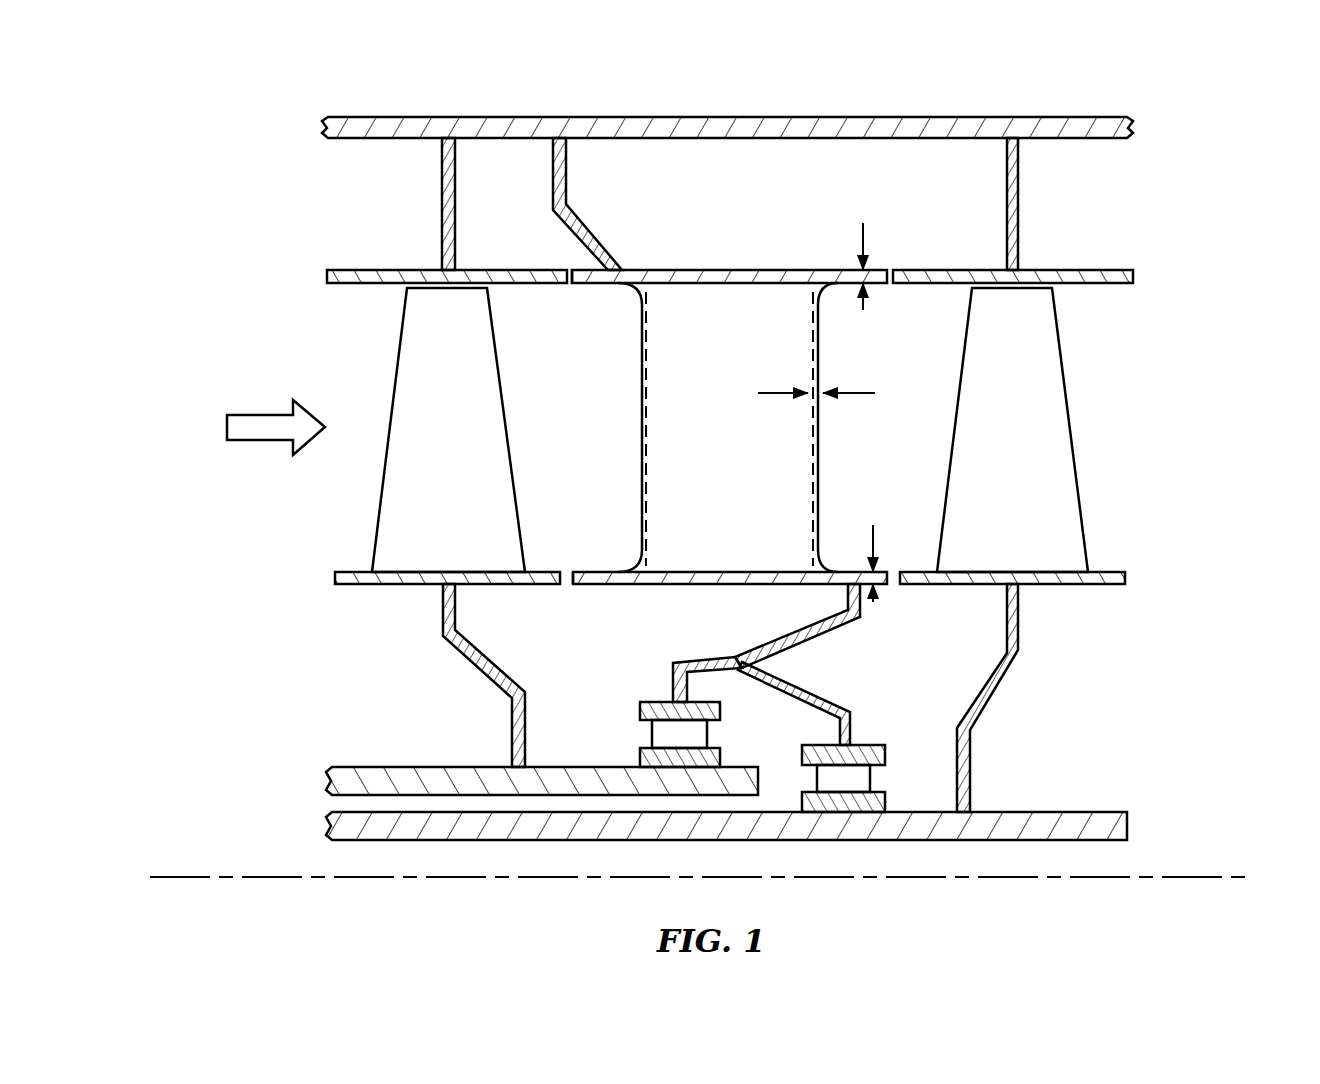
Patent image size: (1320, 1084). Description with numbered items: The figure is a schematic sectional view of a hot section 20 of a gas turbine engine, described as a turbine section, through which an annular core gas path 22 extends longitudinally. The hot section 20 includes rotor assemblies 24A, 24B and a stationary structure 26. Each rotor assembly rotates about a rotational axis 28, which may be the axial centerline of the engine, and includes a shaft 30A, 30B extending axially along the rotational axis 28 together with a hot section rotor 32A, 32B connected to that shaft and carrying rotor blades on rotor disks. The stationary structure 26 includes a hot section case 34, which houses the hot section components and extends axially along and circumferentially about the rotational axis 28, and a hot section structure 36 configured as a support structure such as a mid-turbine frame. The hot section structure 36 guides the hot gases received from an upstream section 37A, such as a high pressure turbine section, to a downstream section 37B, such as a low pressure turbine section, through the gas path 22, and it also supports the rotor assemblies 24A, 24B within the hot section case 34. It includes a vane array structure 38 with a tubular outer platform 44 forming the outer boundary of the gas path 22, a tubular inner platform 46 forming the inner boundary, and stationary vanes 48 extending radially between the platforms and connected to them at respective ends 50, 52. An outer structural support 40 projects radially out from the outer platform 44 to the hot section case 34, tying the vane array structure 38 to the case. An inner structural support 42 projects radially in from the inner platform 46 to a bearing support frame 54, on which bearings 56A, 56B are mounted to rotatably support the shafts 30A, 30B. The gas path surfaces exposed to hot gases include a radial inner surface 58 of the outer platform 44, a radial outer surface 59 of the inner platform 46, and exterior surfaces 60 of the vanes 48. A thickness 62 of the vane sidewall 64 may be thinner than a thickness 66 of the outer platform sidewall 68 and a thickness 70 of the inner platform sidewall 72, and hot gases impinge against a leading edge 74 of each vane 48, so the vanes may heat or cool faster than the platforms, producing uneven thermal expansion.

The hot section 20 is at (225, 132).
The core gas path 22 is at (316, 505).
The rotor assembly 24A is at (315, 782).
The rotor assembly 24B is at (315, 826).
The stationary structure 26 is at (1183, 122).
The rotational axis 28 is at (1240, 876).
The shaft 30A is at (368, 767).
The shaft 30B is at (1090, 812).
The hot section rotor 32A is at (375, 598).
The hot section rotor 32B is at (1058, 608).
The hot section case 34 is at (1055, 117).
The hot section structure 36 is at (835, 218).
The upstream section 37A is at (313, 265).
The downstream section 37B is at (1148, 262).
The vane array structure 38 is at (862, 428).
The outer structural support 40 is at (586, 232).
The inner structural support 42 is at (800, 642).
The outer platform 44 is at (712, 270).
The inner platform 46 is at (665, 584).
The vane 48 is at (640, 428).
The end 50 is at (750, 270).
The end 52 is at (702, 584).
The bearing support frame 54 is at (665, 677).
The bearing 56A is at (638, 738).
The bearing 56B is at (888, 782).
The radial inner surface 58 is at (583, 283).
The radial outer surface 59 is at (585, 572).
The exterior surface 60 is at (673, 473).
The thickness 62 is at (770, 393).
The sidewall 64 is at (818, 442).
The thickness 66 is at (863, 310).
The sidewall 68 is at (800, 283).
The thickness 70 is at (873, 540).
The sidewall 72 is at (782, 572).
The leading edge 74 is at (642, 398).